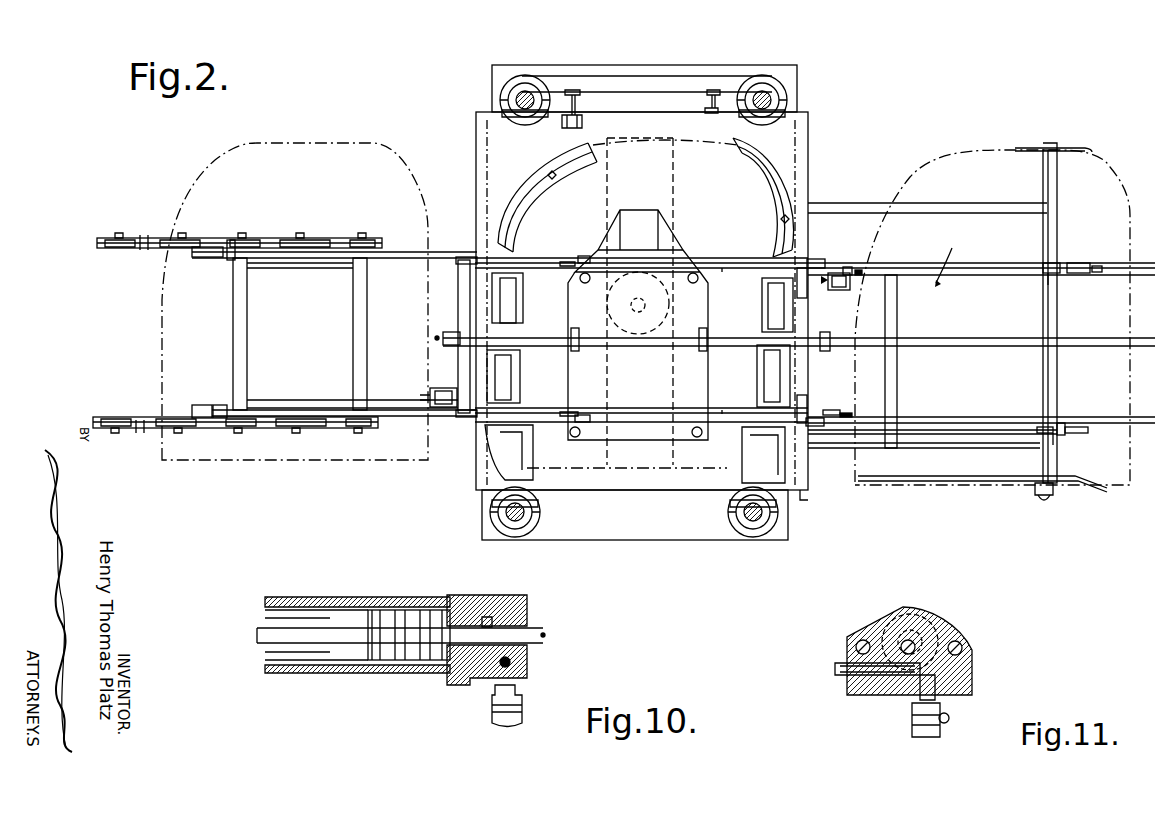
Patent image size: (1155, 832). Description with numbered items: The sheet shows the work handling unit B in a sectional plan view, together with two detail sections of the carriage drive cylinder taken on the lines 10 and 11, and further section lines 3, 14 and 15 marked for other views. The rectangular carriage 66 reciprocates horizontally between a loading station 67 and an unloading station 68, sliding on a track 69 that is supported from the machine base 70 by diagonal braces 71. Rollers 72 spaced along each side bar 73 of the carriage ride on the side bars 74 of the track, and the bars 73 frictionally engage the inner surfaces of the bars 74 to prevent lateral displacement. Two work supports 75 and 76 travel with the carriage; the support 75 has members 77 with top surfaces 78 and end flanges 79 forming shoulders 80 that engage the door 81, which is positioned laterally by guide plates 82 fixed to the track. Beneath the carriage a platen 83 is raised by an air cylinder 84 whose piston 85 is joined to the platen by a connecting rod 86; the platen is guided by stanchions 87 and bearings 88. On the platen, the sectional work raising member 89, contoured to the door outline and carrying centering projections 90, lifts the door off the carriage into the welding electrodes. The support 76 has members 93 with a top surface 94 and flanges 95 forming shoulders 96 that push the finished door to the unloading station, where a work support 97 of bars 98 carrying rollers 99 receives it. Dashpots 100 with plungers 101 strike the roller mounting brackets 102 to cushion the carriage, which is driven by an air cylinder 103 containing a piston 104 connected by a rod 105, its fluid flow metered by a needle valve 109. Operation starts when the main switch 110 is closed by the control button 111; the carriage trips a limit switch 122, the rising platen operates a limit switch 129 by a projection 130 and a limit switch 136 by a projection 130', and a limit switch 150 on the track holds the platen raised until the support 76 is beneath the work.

In FIG. 2, the section line 3 is at (68, 303).
In FIG. 2, the section line 10— 10 is at (842, 330).
In FIG. 10, the section line 11— 11 is at (485, 578).
In FIG. 2, the section line 14- 14 is at (722, 55).
In FIG. 2, the section line 15- 15 is at (573, 48).
In FIG. 2, the carriage 66 is at (716, 260).
In FIG. 2, the loading station 67 is at (1130, 212).
In FIG. 2, the unloading station 68 is at (167, 225).
In FIG. 2, the track 69 is at (440, 258).
In FIG. 2, the base 70 is at (642, 533).
In FIG. 2, the diagonal braces 71 is at (316, 268).
In FIG. 2, the rollers 72 is at (583, 256).
In FIG. 2, the side bars of the carriage 73 is at (466, 257).
In FIG. 2, the side bars of the track 74 is at (405, 254).
In FIG. 2, the work support 75 is at (990, 278).
In FIG. 2, the work support 76 is at (745, 268).
In FIG. 2, the members 77 is at (965, 277).
In FIG. 2, the top surfaces 78 is at (897, 280).
In FIG. 2, the flanges 79 is at (842, 266).
In FIG. 2, the shoulders 80 is at (862, 270).
In FIG. 2, the door 81 is at (698, 148).
In FIG. 2, the guide plates 82 is at (1060, 147).
In FIG. 2, the platen 83 is at (808, 140).
In FIG. 2, the air cylinder 84 is at (650, 362).
In FIG. 2, the piston 85 is at (608, 305).
In FIG. 2, the connecting rod 86 is at (648, 347).
In FIG. 2, the stanchions 87 is at (522, 80).
In FIG. 2, the bearings 88 is at (510, 95).
In FIG. 2, the work raising member 89 is at (540, 184).
In FIG. 2, the projections 90 is at (568, 174).
In FIG. 2, the members 93 is at (725, 270).
In FIG. 2, the top surface 94 is at (742, 270).
In FIG. 2, the flanges 95 is at (803, 270).
In FIG. 2, the shoulders 96 is at (768, 300).
In FIG. 2, the work support 97 is at (270, 238).
In FIG. 2, the bars 98 is at (147, 237).
In FIG. 2, the rollers 99 is at (128, 237).
In FIG. 2, the dashpots 100 is at (212, 258).
In FIG. 2, the plungers 101 is at (231, 242).
In FIG. 2, the mounting brackets 102 is at (575, 262).
In FIG. 2, the air cylinder 103 is at (553, 347).
In FIG. 10, the air cylinder 103 is at (335, 597).
In FIG. 11, the air cylinder 103 is at (963, 632).
In FIG. 10, the piston 104 is at (395, 612).
In FIG. 11, the piston 104 is at (912, 607).
In FIG. 2, the rod 105 is at (950, 349).
In FIG. 10, the rod 105 is at (320, 644).
In FIG. 11, the rod 105 is at (930, 626).
In FIG. 10, the needle valve 109 is at (527, 660).
In FIG. 11, the needle valve 109 is at (890, 695).
In FIG. 2, the main switch 110 is at (1054, 490).
In FIG. 2, the control button 111 is at (1045, 500).
In FIG. 2, the limit switch 122 is at (840, 290).
In FIG. 2, the limit switch 129 is at (707, 95).
In FIG. 2, the projection 130 is at (695, 122).
In FIG. 2, the projection 130' is at (591, 112).
In FIG. 2, the limit switch 136 is at (580, 92).
In FIG. 2, the limit switch 150 is at (438, 388).
In FIG. 2, the work handling unit B is at (948, 257).